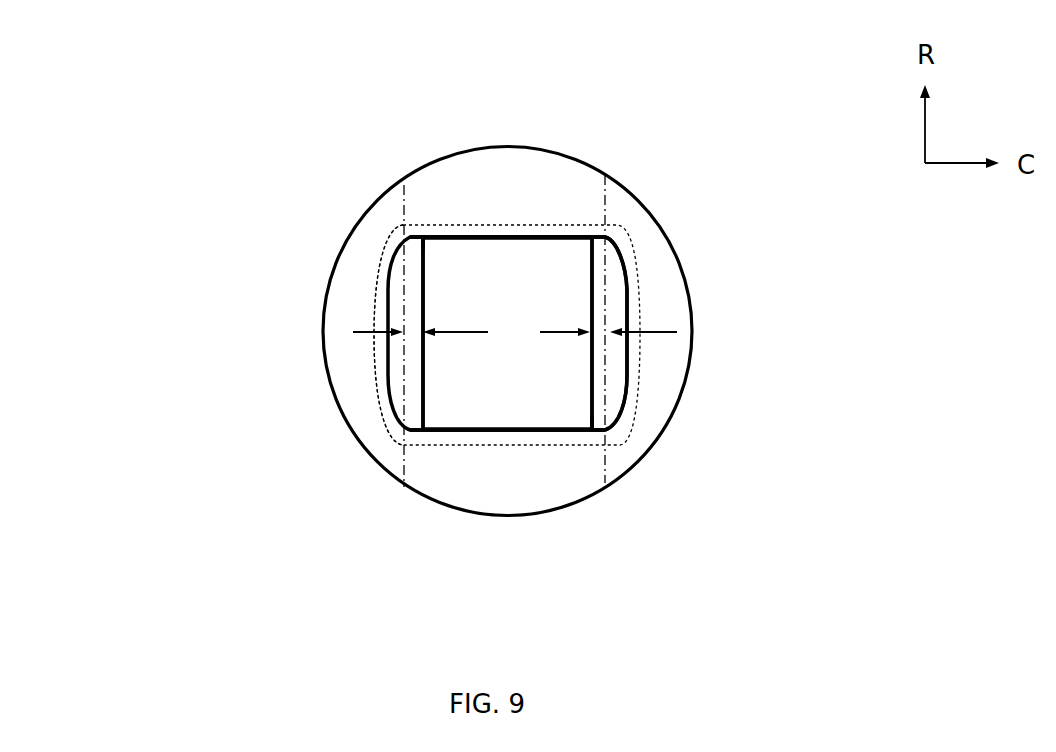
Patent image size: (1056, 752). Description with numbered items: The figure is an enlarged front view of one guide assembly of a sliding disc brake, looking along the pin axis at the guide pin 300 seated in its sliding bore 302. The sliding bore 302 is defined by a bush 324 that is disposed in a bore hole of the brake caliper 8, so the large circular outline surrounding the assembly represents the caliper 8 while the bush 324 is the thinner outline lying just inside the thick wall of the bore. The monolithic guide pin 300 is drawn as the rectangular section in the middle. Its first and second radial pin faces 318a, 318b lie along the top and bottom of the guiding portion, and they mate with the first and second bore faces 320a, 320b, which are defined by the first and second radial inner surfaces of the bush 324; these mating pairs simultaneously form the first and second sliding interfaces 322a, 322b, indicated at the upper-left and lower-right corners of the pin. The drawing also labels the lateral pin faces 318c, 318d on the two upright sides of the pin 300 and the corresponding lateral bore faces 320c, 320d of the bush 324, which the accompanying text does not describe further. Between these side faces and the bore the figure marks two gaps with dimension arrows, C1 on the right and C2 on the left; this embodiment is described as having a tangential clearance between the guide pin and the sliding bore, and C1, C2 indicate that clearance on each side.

The brake caliper 8 is at (358, 292).
The guide pin 300 is at (563, 262).
The sliding bore 302 is at (387, 255).
The first radial pin face 318a is at (487, 238).
The second radial pin face 318b is at (475, 431).
The third wall 318c is at (427, 392).
The fourth wall 318d is at (592, 382).
The first bore face 320a is at (518, 267).
The second bore face 320b is at (510, 428).
The third surface 320c is at (378, 318).
The fourth surface 320d is at (627, 292).
The first sliding interface 322a is at (398, 237).
The second sliding interface 322b is at (616, 424).
The bush 324 is at (623, 237).
The first clearance C1 is at (648, 333).
The second clearance C2 is at (372, 333).